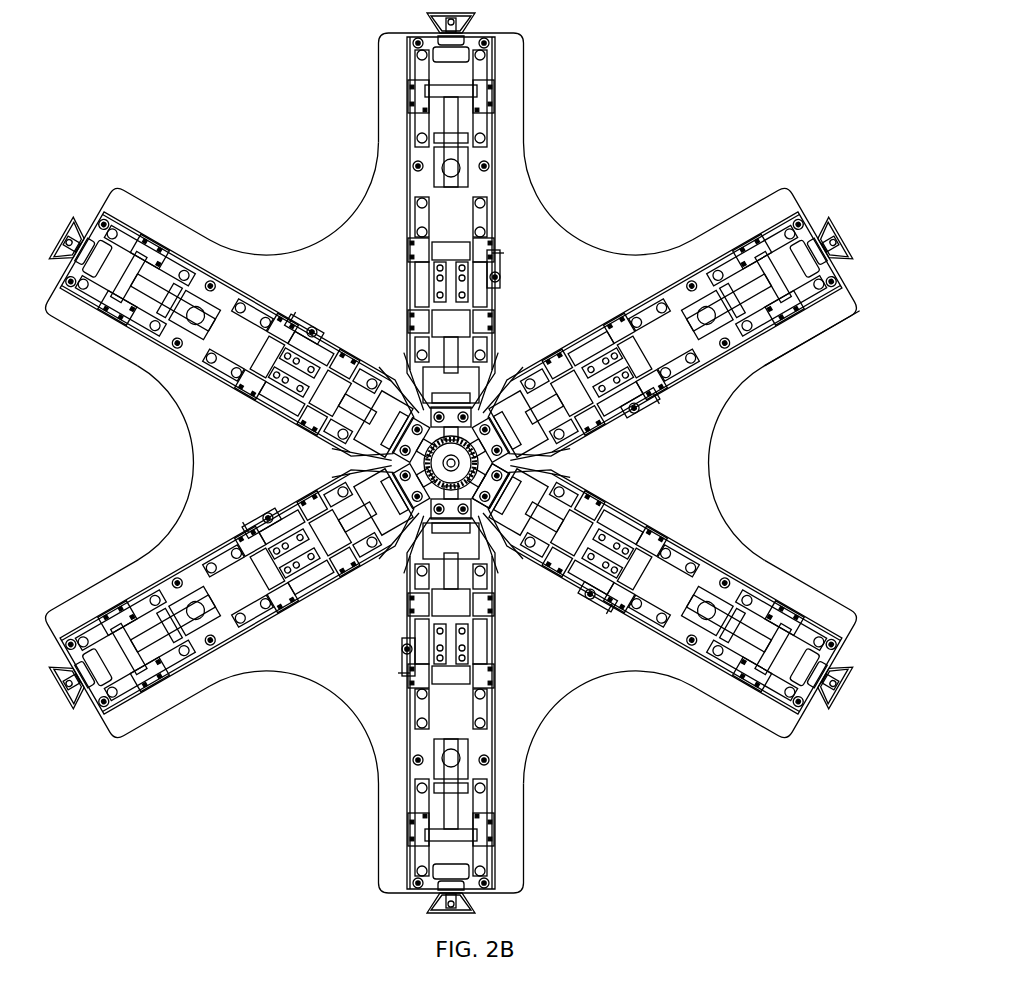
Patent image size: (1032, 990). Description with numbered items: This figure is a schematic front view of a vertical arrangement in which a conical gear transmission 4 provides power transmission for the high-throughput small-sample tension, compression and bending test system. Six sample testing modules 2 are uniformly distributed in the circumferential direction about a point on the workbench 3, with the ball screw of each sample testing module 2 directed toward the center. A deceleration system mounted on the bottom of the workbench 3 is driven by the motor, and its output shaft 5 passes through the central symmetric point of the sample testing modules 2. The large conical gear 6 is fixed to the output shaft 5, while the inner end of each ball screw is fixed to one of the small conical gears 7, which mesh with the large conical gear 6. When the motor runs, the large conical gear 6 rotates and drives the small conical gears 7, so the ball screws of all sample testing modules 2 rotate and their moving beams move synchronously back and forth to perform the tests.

The sample testing module 2 is at (490, 163).
The workbench 3 is at (527, 237).
The conical gear transmission 4 is at (523, 367).
The output shaft 5 is at (748, 375).
The large conical gear 6 is at (478, 461).
The small conical gear 7 is at (557, 472).